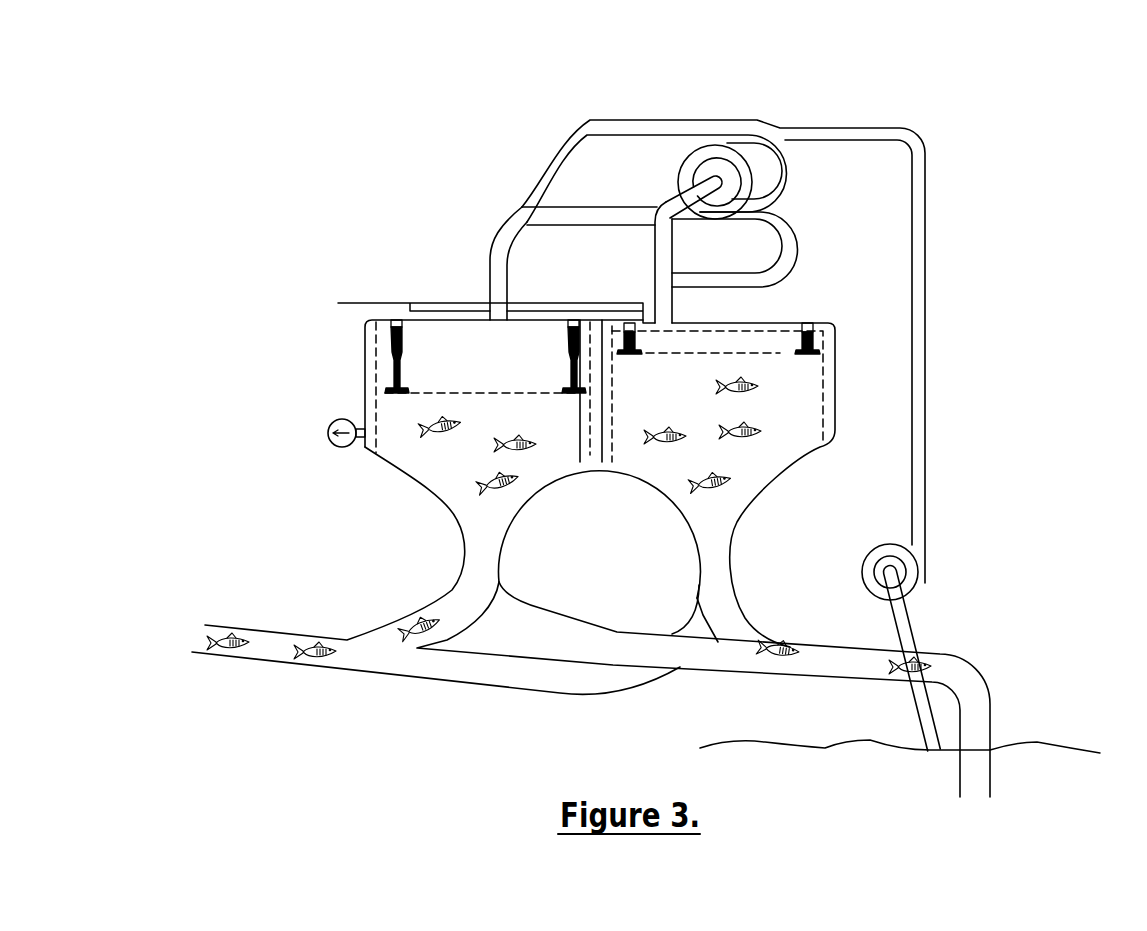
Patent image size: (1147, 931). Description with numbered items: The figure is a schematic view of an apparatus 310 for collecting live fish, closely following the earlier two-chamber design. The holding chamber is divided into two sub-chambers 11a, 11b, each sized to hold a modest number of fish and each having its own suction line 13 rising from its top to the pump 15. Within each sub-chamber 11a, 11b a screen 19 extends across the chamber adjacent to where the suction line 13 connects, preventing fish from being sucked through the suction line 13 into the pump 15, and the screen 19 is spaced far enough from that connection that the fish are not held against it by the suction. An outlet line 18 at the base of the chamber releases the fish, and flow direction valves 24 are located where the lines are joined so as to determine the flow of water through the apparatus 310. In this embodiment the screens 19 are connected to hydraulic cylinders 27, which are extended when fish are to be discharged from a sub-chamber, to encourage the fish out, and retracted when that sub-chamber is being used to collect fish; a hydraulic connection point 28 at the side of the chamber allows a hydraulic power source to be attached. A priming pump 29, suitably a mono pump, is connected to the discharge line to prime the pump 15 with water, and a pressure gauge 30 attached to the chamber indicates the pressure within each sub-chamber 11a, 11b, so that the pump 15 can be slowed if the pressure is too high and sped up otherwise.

The apparatus for collecting fish 310 is at (978, 212).
The suction line 13 is at (660, 250).
The pump 15 is at (723, 165).
The flow direction valve 24 is at (787, 205).
The hydraulic connection point 28 is at (356, 299).
The hydraulic cylinder 27 is at (389, 343).
The screen 19 is at (387, 384).
The sub-chamber 11b is at (387, 410).
The sub-chamber 11a is at (797, 432).
The pressure gauge 30 is at (337, 447).
The outlet line 18 is at (205, 624).
The priming pump 29 is at (908, 582).